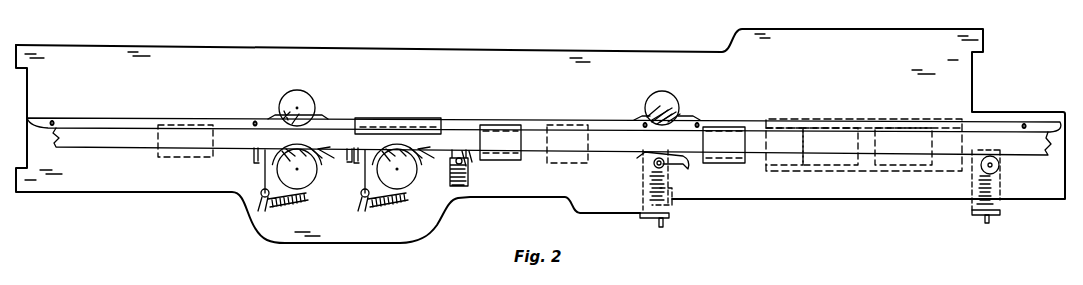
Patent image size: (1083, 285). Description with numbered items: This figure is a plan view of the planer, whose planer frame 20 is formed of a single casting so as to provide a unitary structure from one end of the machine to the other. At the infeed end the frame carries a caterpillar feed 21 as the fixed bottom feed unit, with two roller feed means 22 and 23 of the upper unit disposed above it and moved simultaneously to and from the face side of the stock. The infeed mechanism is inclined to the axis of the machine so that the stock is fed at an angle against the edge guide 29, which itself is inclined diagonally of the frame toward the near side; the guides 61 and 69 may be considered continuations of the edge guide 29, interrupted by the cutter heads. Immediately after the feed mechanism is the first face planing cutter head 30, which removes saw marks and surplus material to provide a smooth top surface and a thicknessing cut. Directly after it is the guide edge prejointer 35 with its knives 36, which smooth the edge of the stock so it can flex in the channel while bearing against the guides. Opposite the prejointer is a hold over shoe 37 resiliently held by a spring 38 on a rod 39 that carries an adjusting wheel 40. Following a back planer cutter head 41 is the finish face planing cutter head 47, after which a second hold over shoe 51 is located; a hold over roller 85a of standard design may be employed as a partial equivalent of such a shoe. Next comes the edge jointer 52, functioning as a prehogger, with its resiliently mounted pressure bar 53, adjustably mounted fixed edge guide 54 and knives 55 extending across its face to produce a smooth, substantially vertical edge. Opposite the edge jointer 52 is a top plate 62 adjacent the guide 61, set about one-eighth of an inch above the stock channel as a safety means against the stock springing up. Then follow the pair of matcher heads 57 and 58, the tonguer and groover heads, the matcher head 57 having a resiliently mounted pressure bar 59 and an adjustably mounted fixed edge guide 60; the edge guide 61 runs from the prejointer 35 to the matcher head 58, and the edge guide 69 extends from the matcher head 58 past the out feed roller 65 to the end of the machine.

The planer frame 20 is at (702, 51).
The caterpillar feed 21 is at (780, 172).
The roller feed means 22 is at (918, 172).
The roller feed means 23 is at (852, 172).
The edge guide 29 is at (758, 119).
The first face planing cutter head 30 is at (738, 163).
The guide edge prejointer 35 is at (674, 102).
The knives 36 is at (688, 104).
The hold over shoe 37 is at (670, 170).
The spring 38 is at (690, 189).
The rod 39 is at (642, 203).
The adjusting wheel 40 is at (667, 218).
The back planer cutter head 41 is at (569, 125).
The finish face planing cutter head 47 is at (502, 125).
The hold over shoe 51 is at (475, 165).
The edge jointer 52 is at (400, 181).
The pressure bar 53 is at (452, 181).
The fixed edge guide 54 is at (367, 149).
The knives 55 is at (403, 166).
The matcher head 57 is at (298, 178).
The matcher head 58 is at (296, 97).
The pressure bar 59 is at (310, 168).
The fixed edge guide 60 is at (263, 172).
The edge guide 61 is at (337, 119).
The top plate 62 is at (410, 118).
The out feed roller 65 is at (178, 164).
The edge guide 69 is at (231, 119).
The hold over roller 85a is at (999, 170).